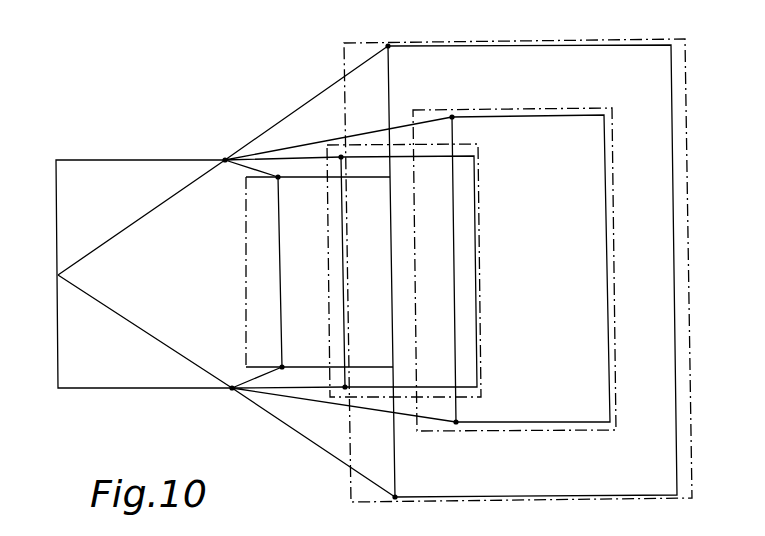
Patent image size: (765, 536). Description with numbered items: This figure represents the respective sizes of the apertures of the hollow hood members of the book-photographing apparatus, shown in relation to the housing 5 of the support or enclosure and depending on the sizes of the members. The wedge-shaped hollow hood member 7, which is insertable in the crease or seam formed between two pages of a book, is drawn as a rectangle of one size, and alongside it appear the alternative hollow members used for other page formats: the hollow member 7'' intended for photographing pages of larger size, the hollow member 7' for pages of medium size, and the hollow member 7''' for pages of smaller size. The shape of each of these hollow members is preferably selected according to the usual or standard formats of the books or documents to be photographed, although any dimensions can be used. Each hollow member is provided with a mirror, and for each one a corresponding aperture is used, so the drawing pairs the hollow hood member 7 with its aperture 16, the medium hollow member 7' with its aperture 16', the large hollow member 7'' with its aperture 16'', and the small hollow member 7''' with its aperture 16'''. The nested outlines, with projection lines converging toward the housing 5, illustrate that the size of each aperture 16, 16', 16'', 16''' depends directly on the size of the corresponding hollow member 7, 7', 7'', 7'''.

The housing 5 is at (146, 160).
The hollow hood member 7 is at (514, 285).
The hollow member 7' is at (422, 270).
The hollow member 7'' is at (531, 270).
The hollow member 7''' is at (240, 272).
The aperture 16 is at (549, 268).
The aperture 16' is at (437, 271).
The aperture 16'' is at (557, 271).
The aperture 16''' is at (298, 272).